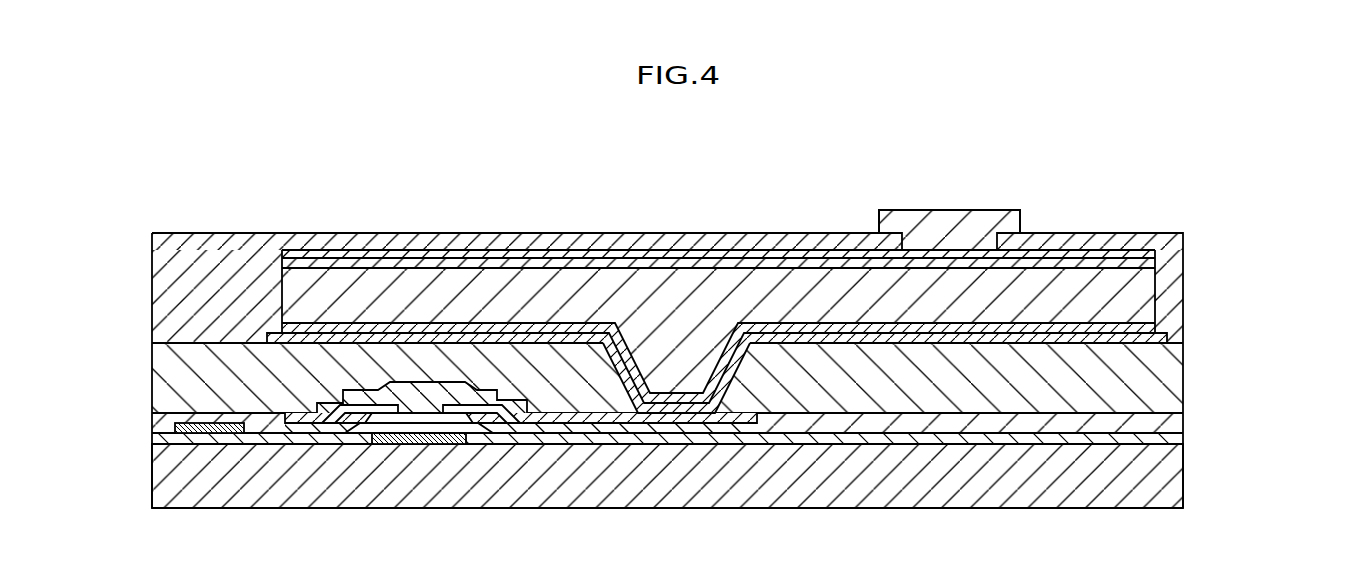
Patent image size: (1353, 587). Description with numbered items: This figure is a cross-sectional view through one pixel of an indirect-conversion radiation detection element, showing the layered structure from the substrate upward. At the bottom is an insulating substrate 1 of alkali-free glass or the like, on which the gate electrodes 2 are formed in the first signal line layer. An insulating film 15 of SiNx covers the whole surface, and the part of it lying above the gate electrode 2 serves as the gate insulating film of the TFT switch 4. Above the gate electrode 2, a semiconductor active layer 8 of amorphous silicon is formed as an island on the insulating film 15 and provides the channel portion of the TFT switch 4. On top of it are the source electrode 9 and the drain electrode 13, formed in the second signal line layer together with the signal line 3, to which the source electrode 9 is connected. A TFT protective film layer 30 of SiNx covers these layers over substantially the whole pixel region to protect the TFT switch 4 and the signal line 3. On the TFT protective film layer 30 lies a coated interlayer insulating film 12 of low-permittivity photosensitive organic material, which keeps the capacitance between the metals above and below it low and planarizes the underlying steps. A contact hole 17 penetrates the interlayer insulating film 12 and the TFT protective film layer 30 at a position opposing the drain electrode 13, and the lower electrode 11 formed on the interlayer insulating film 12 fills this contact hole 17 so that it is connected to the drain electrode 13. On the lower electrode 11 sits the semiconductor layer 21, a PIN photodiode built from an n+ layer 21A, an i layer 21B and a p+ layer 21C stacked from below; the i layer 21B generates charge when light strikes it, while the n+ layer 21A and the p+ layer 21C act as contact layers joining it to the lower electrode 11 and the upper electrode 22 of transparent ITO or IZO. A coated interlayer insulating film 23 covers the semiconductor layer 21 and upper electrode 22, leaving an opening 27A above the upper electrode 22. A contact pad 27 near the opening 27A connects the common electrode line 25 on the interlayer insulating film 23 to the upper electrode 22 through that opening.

The insulating substrate 1 is at (1177, 480).
The gate electrode 2 is at (425, 440).
The signal line 3 is at (203, 434).
The TFT switch 4 is at (393, 450).
The semiconductor active layer 8 is at (455, 437).
The source electrode 9 is at (332, 428).
The lower electrode 11 is at (935, 342).
The interlayer insulating film 12 is at (1168, 378).
The drain electrode 13 is at (553, 425).
The insulating film 15 is at (1178, 437).
The contact hole 17 is at (686, 360).
The semiconductor layer 21 is at (802, 283).
The n+ layer 21A is at (1137, 326).
The i layer 21B is at (1142, 297).
The p+ layer 21C is at (1140, 265).
The upper electrode 22 is at (1065, 253).
The interlayer insulating film 23 is at (257, 252).
The common electrode line 25 is at (954, 188).
The contact pad 27 is at (963, 218).
The opening 27A is at (920, 218).
The TFT protective film layer 30 is at (1180, 422).